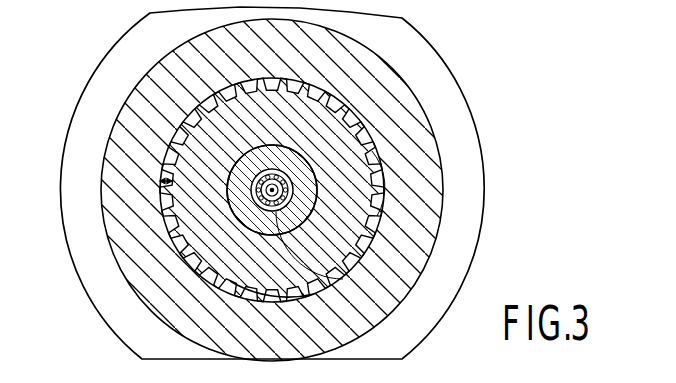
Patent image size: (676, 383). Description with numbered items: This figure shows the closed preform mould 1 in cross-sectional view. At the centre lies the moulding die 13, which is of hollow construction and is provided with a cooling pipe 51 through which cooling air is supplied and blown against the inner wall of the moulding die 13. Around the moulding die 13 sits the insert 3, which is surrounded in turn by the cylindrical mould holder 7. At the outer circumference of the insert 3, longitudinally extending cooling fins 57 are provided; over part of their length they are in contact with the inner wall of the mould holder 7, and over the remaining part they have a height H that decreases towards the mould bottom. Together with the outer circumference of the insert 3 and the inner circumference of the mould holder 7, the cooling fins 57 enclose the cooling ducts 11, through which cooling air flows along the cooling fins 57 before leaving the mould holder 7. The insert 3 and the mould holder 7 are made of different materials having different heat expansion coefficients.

The preform mould 1 is at (84, 88).
The cylindrical mould holder 7 is at (170, 73).
The insert 3 is at (310, 108).
The cooling ducts 11 is at (366, 129).
The moulding die 13 is at (333, 270).
The cooling pipe 51 is at (284, 176).
The cooling fins 57 is at (292, 165).
The height H is at (158, 182).